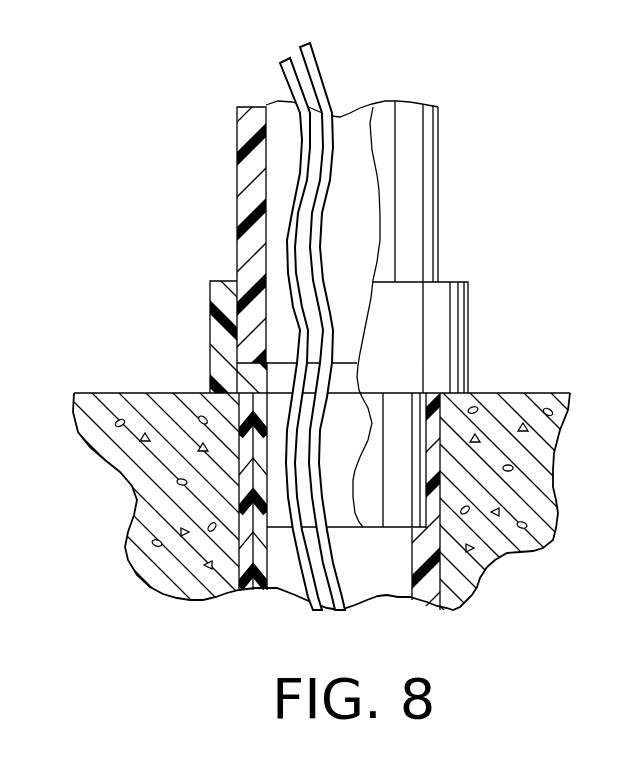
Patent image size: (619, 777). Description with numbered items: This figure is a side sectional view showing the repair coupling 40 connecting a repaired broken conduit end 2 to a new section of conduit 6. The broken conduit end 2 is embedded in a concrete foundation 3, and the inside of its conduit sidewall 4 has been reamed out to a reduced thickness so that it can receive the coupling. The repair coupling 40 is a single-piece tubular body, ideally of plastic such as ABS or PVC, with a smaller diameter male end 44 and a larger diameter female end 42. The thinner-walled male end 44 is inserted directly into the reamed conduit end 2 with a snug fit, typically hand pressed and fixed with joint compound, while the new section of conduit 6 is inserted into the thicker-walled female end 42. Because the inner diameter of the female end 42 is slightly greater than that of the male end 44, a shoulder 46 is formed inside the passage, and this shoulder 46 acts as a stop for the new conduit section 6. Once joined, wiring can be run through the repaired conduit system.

The broken conduit end 2 is at (257, 605).
The concrete foundation 3 is at (110, 398).
The conduit sidewall 4 is at (410, 577).
The new section of conduit 6 is at (253, 176).
The repair coupling 40 is at (478, 313).
The female end 42 is at (455, 365).
The male end 44 is at (370, 503).
The shoulder 46 is at (240, 348).